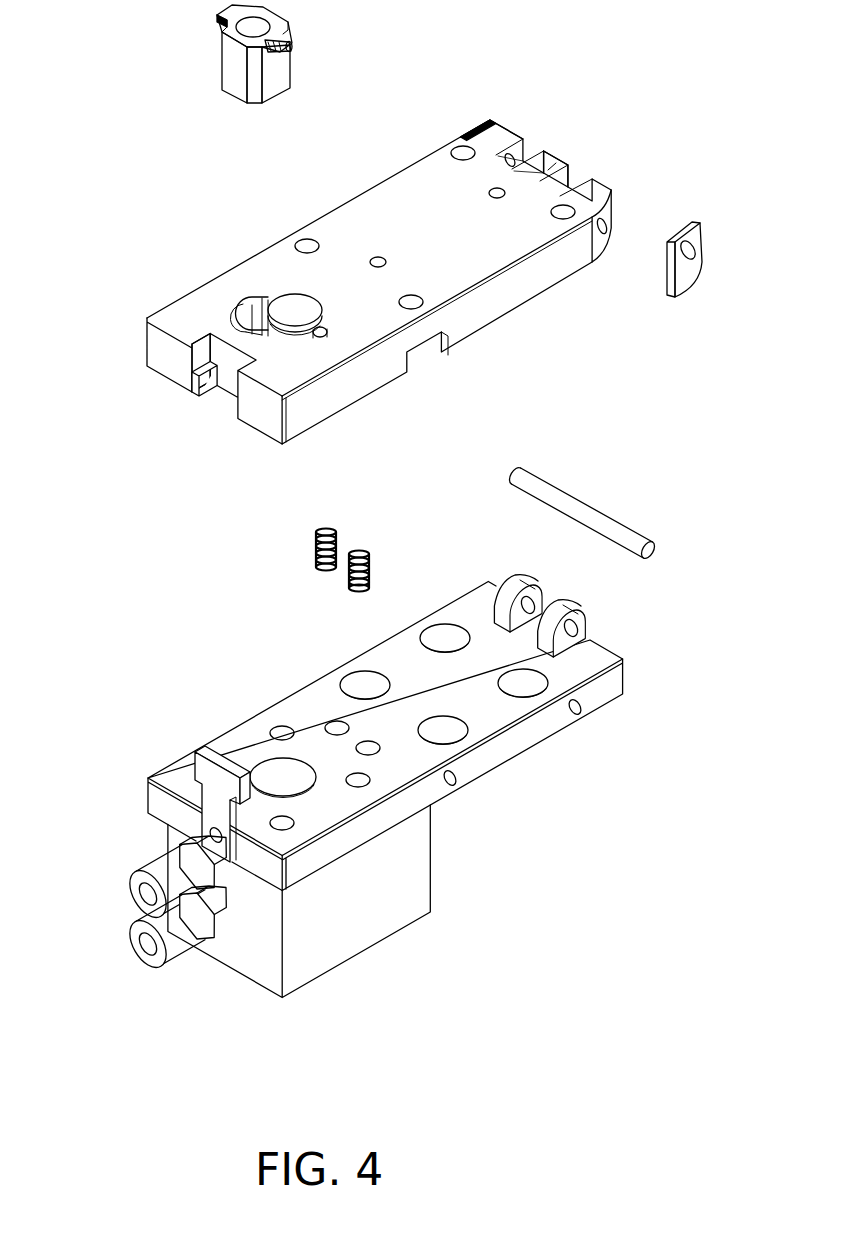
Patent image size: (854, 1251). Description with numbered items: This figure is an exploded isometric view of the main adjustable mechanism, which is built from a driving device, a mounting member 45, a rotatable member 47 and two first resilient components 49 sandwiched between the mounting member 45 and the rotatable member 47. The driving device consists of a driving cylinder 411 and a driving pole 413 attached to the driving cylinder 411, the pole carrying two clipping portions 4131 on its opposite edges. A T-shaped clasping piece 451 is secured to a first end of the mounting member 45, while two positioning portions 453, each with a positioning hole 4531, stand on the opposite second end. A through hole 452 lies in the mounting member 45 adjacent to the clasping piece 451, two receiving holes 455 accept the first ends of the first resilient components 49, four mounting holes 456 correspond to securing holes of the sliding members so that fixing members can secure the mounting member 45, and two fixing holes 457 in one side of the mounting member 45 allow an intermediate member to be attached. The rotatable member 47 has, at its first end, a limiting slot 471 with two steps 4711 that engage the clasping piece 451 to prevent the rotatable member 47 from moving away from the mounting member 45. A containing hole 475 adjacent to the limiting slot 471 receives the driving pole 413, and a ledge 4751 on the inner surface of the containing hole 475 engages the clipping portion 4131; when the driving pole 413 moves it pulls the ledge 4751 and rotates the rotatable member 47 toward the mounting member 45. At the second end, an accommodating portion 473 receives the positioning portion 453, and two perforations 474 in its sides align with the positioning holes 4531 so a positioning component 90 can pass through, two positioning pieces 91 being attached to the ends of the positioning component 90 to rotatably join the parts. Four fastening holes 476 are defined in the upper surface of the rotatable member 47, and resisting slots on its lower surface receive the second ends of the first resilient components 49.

The driving pole 413 is at (230, 62).
The clipping portion 4131 is at (292, 47).
The rotatable member 47 is at (364, 258).
The limiting slot 471 is at (218, 398).
The step 4711 is at (192, 378).
The accommodating portion 473 is at (557, 175).
The perforation 474 is at (518, 150).
The containing hole 475 is at (203, 256).
The ledge 4751 is at (174, 291).
The fastening hole 476 is at (415, 302).
The positioning piece 91 is at (688, 272).
The positioning component 90 is at (585, 508).
The first resilient component 49 is at (316, 527).
The mounting member 45 is at (418, 733).
The clasping piece 451 is at (210, 768).
The through hole 452 is at (273, 772).
The positioning portion 453 is at (610, 621).
The positioning hole 4531 is at (585, 622).
The receiving hole 455 is at (370, 748).
The mounting hole 456 is at (452, 727).
The fixing hole 457 is at (580, 710).
The driving cylinder 411 is at (380, 890).